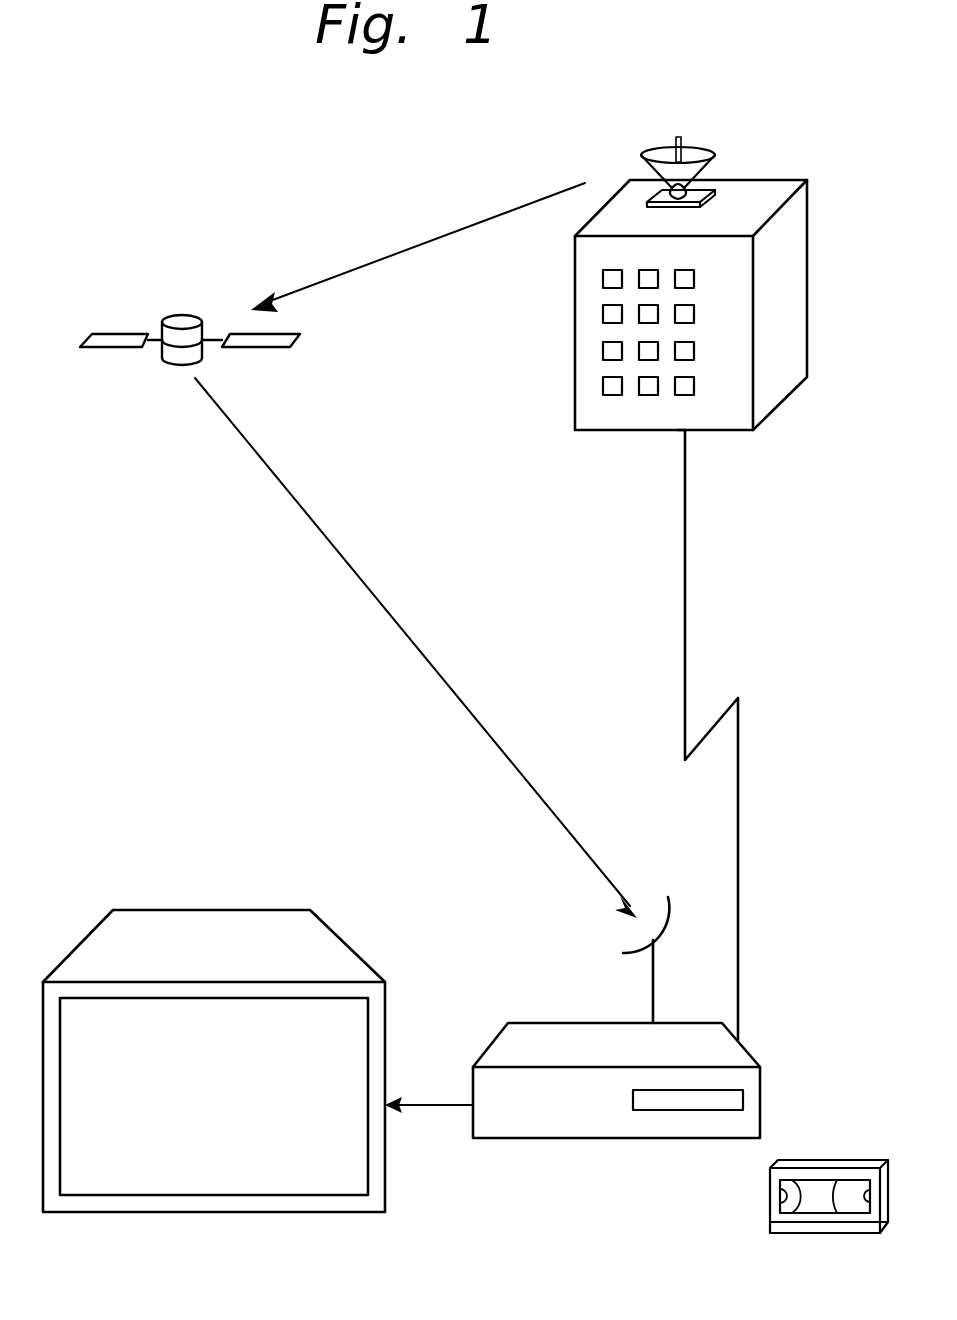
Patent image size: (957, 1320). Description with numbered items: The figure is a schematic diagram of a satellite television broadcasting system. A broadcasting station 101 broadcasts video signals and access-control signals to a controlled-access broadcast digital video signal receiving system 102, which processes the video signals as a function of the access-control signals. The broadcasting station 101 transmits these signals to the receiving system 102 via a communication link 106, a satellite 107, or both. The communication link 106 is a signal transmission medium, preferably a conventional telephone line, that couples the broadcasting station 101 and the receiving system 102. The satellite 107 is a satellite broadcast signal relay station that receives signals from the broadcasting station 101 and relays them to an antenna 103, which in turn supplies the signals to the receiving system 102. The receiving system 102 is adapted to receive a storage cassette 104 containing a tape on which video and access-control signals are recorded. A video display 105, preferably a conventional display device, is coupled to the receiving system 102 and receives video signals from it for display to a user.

The broadcasting station 101 is at (807, 280).
The controlled-access broadcast digital video signal receiving system 102 is at (760, 1098).
The antenna 103 is at (653, 980).
The storage cassette 104 is at (770, 1218).
The video display 105 is at (138, 909).
The communication link 106 is at (685, 595).
The satellite 107 is at (182, 318).